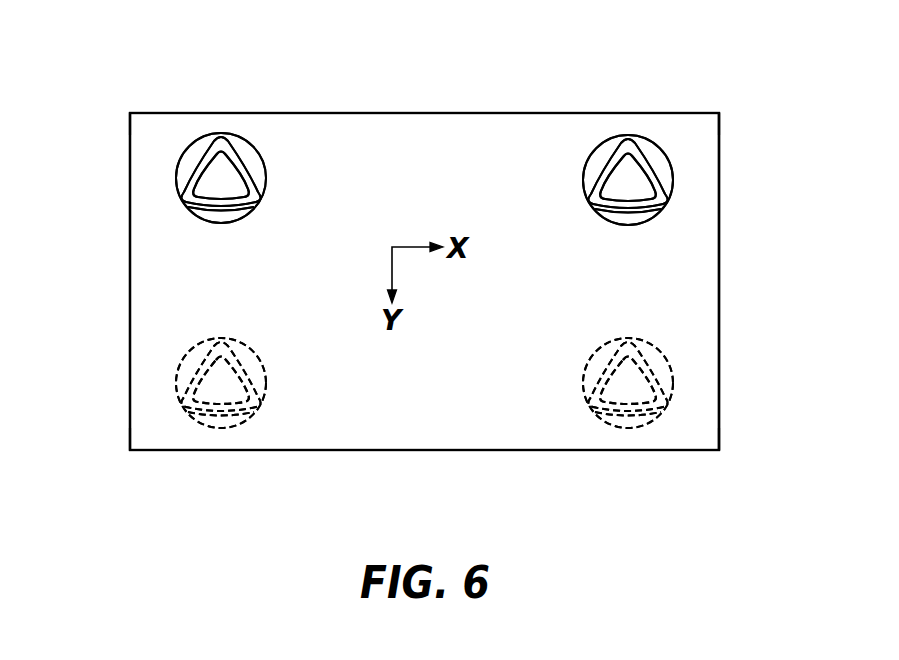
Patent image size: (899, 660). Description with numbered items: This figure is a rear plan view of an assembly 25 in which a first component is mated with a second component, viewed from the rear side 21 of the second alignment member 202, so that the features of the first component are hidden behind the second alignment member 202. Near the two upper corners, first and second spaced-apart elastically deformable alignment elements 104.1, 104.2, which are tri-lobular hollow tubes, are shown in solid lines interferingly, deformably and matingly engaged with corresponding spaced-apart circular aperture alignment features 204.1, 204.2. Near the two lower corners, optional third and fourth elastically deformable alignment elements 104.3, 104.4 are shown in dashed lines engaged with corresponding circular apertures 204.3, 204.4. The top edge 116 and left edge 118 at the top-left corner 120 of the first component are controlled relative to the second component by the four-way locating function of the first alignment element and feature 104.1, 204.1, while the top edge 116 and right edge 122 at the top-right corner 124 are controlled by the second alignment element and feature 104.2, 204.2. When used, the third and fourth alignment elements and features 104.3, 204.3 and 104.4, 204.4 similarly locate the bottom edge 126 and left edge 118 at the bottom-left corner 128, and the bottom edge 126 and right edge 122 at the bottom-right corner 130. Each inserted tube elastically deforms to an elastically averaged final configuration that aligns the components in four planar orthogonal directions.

The rear side of second alignment member 21 is at (440, 165).
The second alignment member 202 is at (452, 411).
The assembly 25 is at (733, 280).
The top edge 116 is at (586, 100).
The left edge 118 is at (118, 248).
The top-left corner 120 is at (118, 103).
The right edge 122 is at (733, 329).
The top-right corner 124 is at (729, 104).
The bottom edge 126 is at (354, 464).
The bottom-left corner 128 is at (118, 459).
The bottom-right corner 130 is at (729, 462).
The first elastically deformable alignment element 104.1 is at (253, 170).
The second elastically deformable alignment element 104.2 is at (660, 168).
The third elastically deformable alignment element 104.3 is at (212, 413).
The fourth elastically deformable alignment element 104.4 is at (656, 363).
The first alignment feature 204.1 is at (180, 160).
The second alignment feature 204.2 is at (668, 200).
The third alignment feature 204.3 is at (182, 362).
The fourth alignment feature 204.4 is at (628, 428).